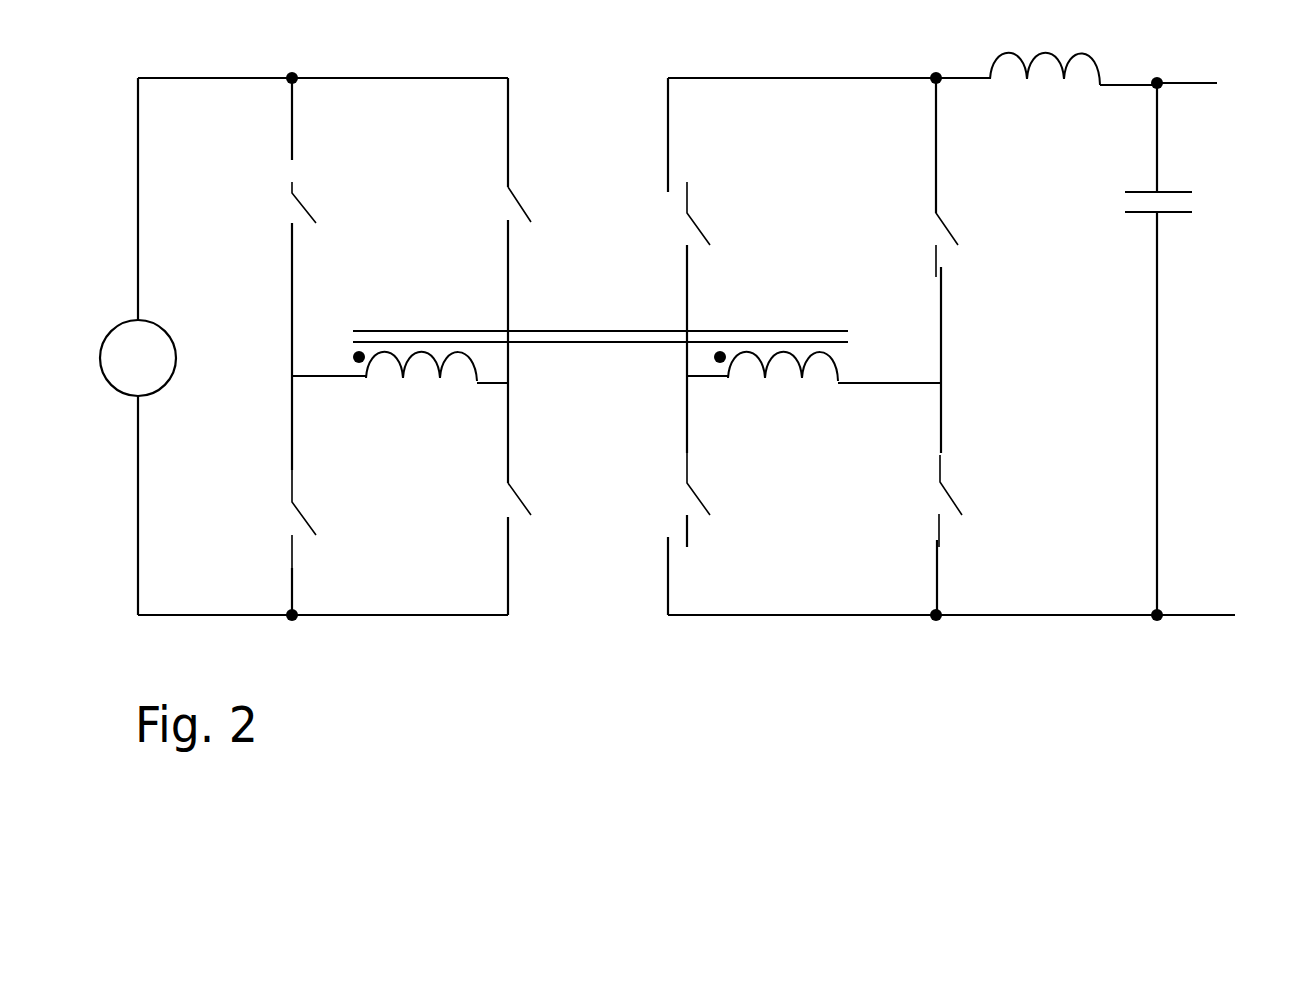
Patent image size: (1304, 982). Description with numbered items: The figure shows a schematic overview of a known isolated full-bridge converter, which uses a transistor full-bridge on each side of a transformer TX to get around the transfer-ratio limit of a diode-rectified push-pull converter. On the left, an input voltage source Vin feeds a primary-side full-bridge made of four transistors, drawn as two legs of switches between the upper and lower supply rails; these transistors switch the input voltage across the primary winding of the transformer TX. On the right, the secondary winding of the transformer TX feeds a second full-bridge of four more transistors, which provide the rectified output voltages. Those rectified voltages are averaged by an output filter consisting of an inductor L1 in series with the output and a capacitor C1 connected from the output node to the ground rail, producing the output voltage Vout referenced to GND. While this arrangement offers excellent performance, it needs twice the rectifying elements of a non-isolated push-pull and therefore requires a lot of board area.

The input voltage source Vin is at (138, 358).
The transformer TX is at (616, 357).
The inductor L1 is at (1046, 52).
The capacitor C1 is at (1136, 349).
The output voltage terminal Vout is at (1210, 222).
The ground terminal GND is at (1212, 632).